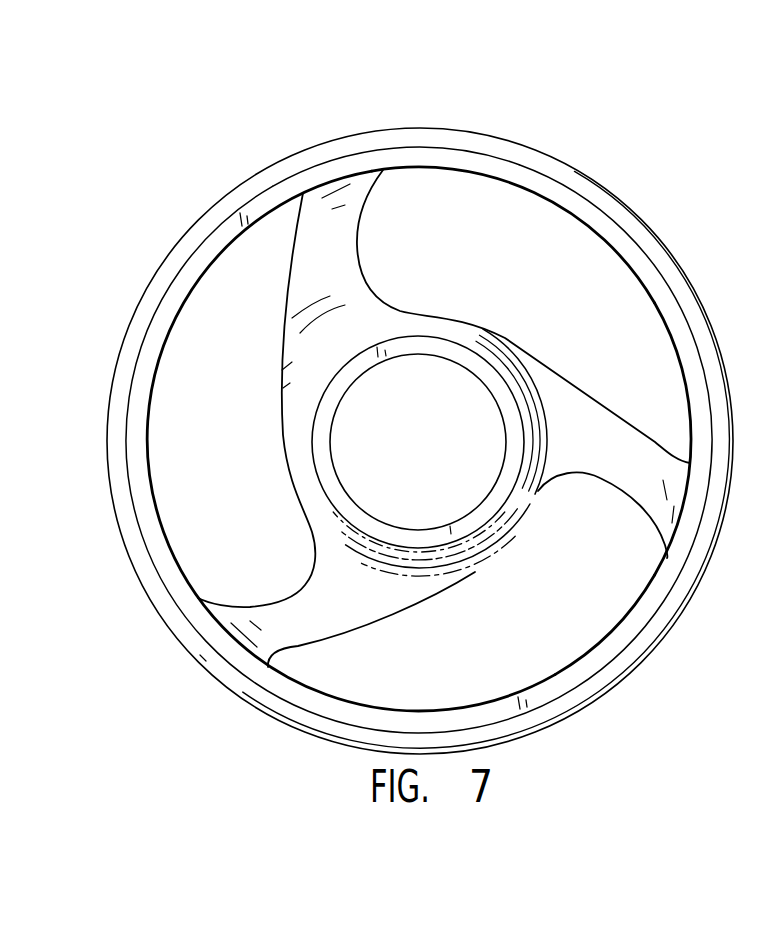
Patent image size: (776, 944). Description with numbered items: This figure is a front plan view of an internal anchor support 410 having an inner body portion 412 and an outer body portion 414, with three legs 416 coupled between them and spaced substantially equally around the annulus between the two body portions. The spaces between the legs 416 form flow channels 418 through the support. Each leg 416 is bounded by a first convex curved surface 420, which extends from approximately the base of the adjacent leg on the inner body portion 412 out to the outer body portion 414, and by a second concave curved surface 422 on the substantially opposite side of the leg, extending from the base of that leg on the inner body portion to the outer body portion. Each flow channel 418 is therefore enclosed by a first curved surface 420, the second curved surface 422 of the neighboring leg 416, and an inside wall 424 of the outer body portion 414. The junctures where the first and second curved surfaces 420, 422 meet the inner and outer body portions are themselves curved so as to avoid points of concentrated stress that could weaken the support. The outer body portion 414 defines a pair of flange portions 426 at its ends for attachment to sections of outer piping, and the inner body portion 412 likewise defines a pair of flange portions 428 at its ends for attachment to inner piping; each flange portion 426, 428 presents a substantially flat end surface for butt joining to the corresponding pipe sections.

The internal anchor support 410 is at (593, 174).
The inner body portion 412 is at (513, 367).
The outer body portion 414 is at (485, 150).
The leg 416 is at (338, 234).
The flow channel 418 is at (163, 410).
The first convex curved surface 420 is at (498, 337).
The second concave curved surface 422 is at (357, 252).
The inside wall 424 is at (565, 208).
The flange portion 426 is at (620, 232).
The flange portion 428 is at (497, 394).